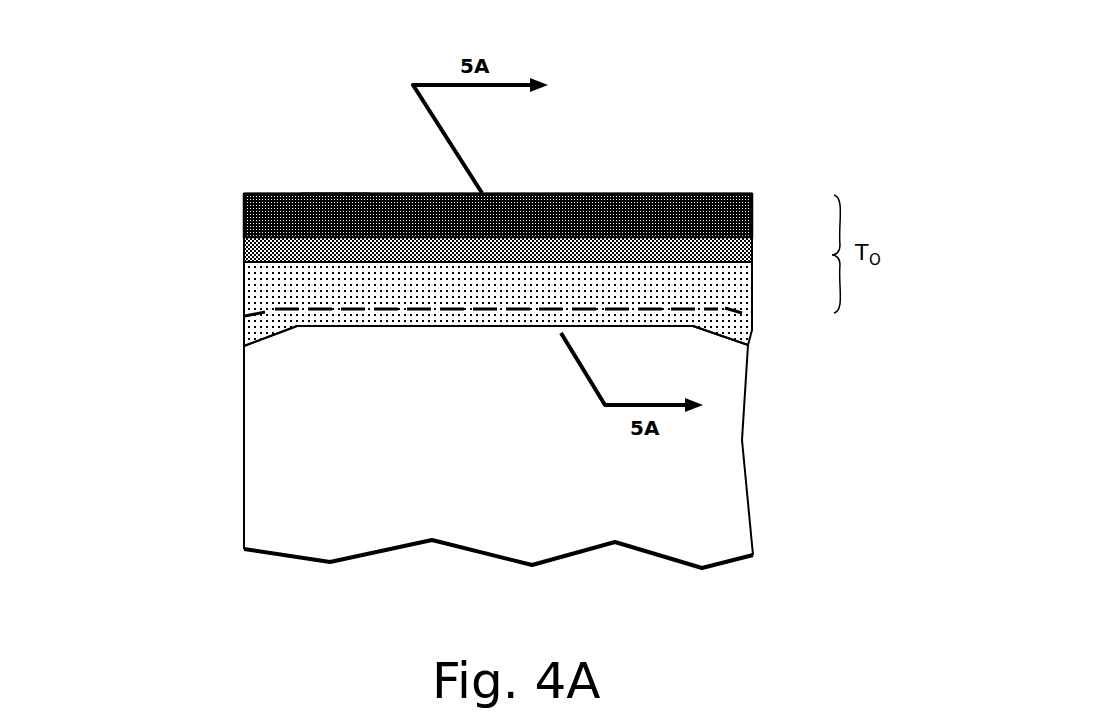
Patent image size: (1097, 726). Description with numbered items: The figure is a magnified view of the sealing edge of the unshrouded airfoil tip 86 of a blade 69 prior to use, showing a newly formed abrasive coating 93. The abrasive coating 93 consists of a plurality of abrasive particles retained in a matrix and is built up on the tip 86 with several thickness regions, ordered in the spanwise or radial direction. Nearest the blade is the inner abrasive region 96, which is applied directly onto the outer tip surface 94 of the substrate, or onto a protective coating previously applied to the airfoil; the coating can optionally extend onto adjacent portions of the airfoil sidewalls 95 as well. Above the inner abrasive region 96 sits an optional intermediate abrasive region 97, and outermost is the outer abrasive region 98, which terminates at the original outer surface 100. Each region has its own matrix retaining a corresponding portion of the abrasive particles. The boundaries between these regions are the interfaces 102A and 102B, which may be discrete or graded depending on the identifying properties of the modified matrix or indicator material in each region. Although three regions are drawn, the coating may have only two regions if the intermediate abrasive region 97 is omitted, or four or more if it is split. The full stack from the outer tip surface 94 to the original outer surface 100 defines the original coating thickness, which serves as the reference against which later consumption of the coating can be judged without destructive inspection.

The blade 69 is at (758, 75).
The original outer surface 100 is at (335, 194).
The abrasive coating 93 is at (568, 182).
The outer abrasive region 98 is at (240, 210).
The interface 102B is at (243, 237).
The intermediate abrasive region 97 is at (240, 248).
The interface 102A is at (243, 262).
The inner abrasive region 96 is at (240, 289).
The outer tip surface 94 is at (295, 318).
The airfoil sidewall 95 is at (540, 451).
The tip 86 is at (762, 282).